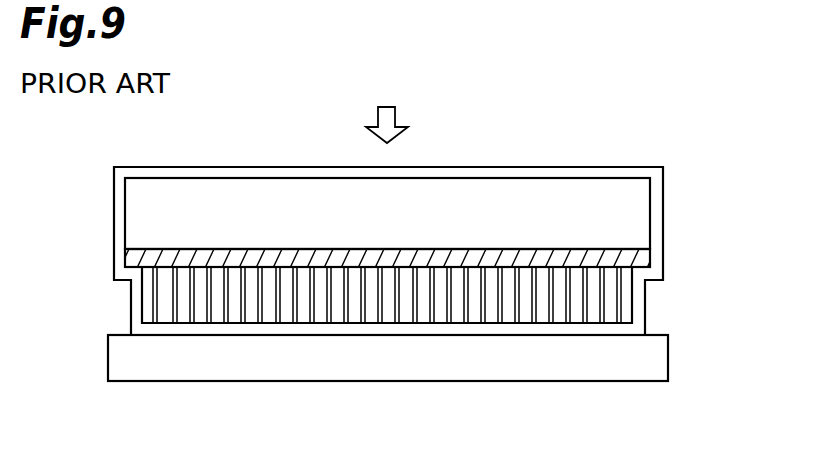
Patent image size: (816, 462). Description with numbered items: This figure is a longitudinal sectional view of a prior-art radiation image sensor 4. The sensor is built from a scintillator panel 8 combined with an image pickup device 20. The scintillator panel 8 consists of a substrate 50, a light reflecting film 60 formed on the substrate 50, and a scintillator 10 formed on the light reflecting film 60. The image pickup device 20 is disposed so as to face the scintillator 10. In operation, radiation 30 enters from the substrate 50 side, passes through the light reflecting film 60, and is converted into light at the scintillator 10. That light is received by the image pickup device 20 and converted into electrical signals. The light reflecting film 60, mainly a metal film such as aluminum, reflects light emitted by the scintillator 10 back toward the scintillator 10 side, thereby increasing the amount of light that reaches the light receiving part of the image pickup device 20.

The radiation image sensor 4 is at (460, 128).
The scintillator panel 8 is at (646, 150).
The scintillator 10 is at (623, 304).
The image pickup device 20 is at (579, 368).
The radiation 30 is at (387, 108).
The substrate 50 is at (640, 214).
The light reflecting film 60 is at (640, 258).